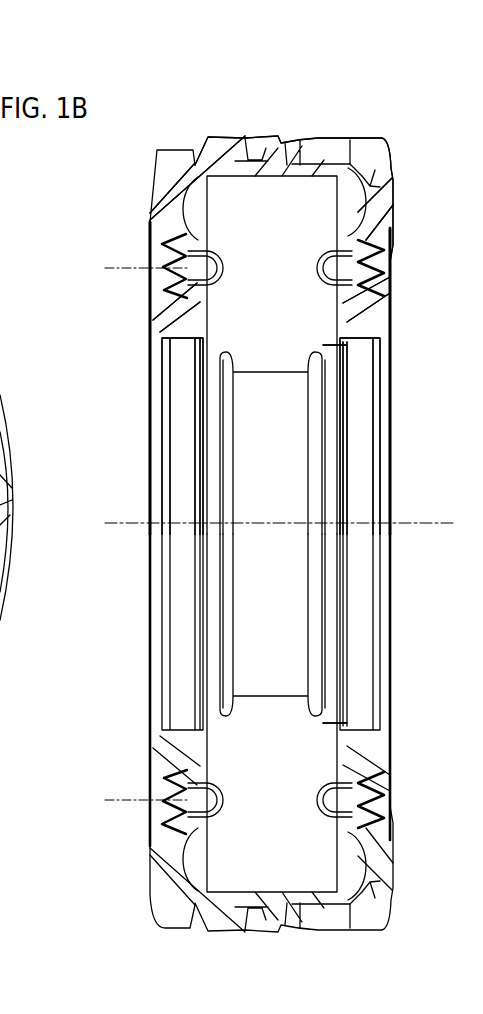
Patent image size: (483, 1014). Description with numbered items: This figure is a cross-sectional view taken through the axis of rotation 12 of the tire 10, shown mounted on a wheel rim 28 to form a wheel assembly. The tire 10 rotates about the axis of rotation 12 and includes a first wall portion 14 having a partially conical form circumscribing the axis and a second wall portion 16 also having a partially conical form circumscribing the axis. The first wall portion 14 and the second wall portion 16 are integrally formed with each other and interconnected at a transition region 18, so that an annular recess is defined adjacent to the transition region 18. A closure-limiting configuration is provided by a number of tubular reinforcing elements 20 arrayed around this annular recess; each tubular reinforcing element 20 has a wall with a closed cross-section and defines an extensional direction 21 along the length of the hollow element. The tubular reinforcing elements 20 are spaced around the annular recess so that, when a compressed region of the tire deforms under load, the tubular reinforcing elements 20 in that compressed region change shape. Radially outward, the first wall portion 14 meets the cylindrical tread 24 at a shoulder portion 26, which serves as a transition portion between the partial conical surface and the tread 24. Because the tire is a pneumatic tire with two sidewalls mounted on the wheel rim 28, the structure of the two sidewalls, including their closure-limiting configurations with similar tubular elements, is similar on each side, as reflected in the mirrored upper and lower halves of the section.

The tire 10 is at (405, 128).
The axis of rotation 12 is at (433, 522).
The first wall portion 14 is at (150, 228).
The second wall portion 16 is at (203, 300).
The transition region 18 is at (316, 270).
The tubular reinforcing elements 20 is at (188, 288).
The extensional direction 21 is at (113, 250).
The cylindrical tread 24 is at (310, 167).
The shoulder portion 26 is at (392, 178).
The wheel rim 28 is at (343, 723).